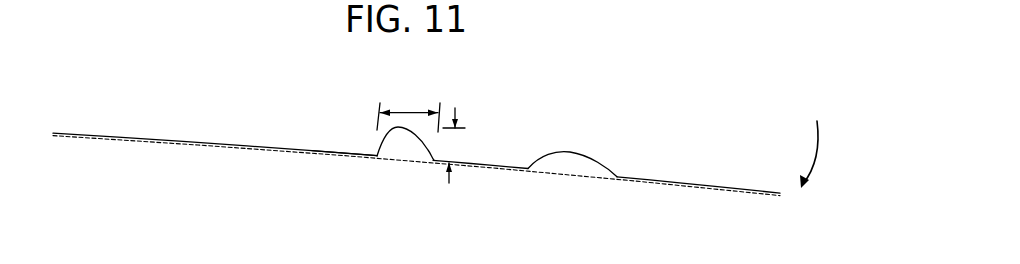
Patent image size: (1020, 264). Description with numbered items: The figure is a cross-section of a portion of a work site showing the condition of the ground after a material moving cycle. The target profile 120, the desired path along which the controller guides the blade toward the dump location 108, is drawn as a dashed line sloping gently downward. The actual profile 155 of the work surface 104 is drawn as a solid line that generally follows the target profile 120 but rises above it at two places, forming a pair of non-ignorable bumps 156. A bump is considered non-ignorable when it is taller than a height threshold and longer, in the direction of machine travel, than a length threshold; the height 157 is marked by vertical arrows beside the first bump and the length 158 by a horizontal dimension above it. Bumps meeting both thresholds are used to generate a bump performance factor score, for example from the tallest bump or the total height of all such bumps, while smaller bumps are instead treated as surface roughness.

The work surface 104 is at (265, 147).
The dump location 108 is at (816, 145).
The target profile 120 is at (175, 140).
The actual profile 155 is at (325, 152).
The non-ignorable bumps 156 is at (385, 143).
The height 157 is at (453, 145).
The length 158 is at (408, 109).